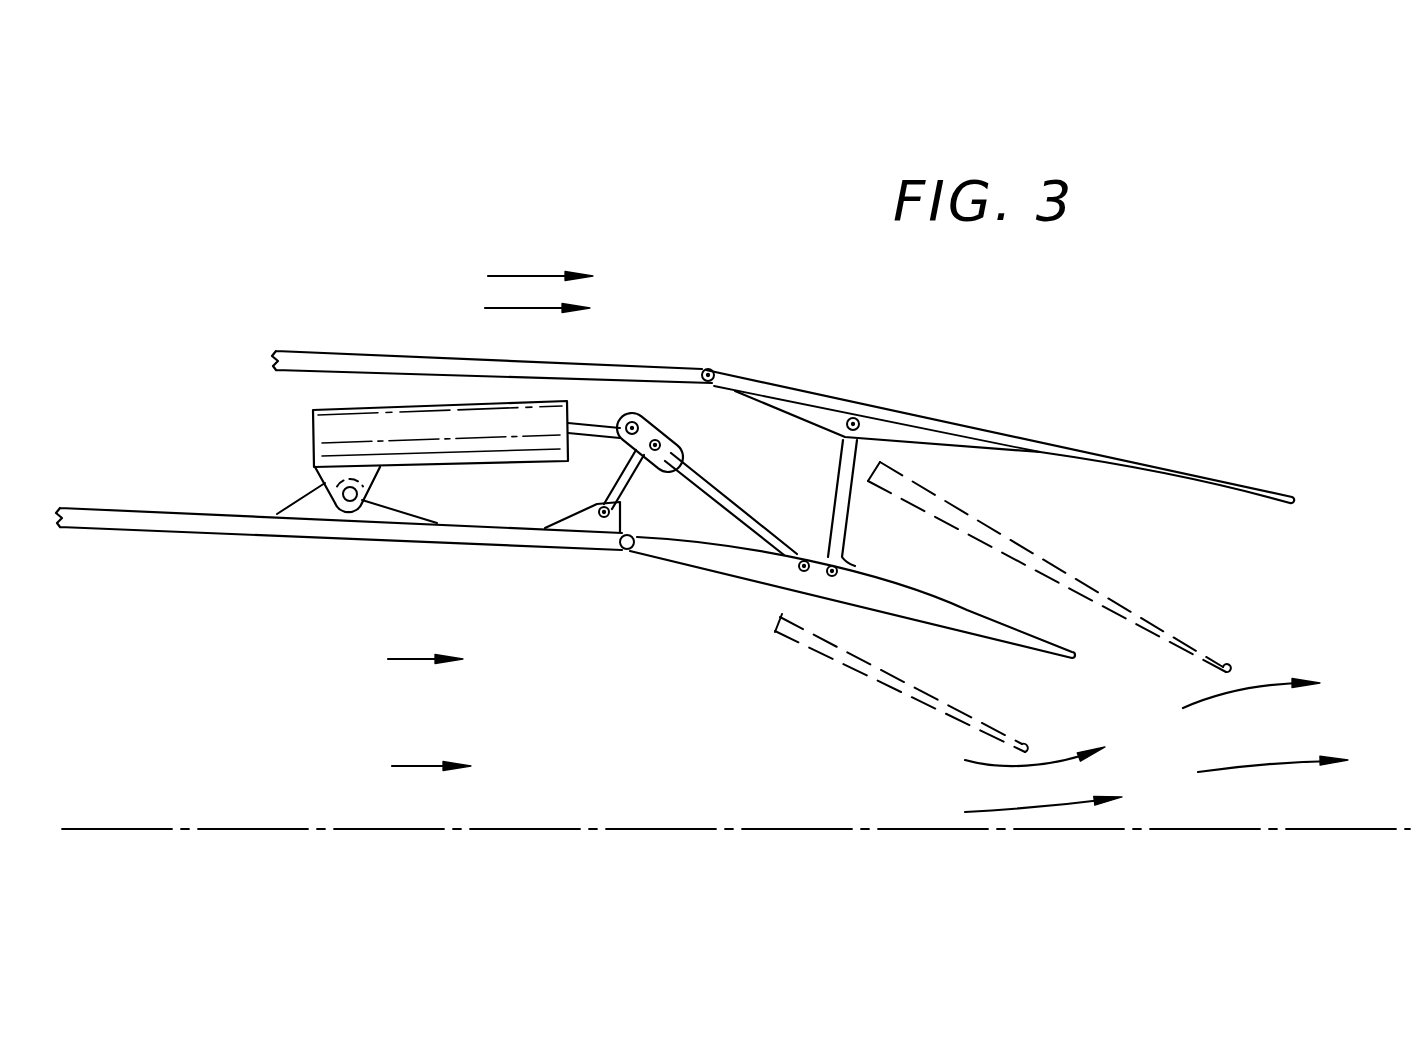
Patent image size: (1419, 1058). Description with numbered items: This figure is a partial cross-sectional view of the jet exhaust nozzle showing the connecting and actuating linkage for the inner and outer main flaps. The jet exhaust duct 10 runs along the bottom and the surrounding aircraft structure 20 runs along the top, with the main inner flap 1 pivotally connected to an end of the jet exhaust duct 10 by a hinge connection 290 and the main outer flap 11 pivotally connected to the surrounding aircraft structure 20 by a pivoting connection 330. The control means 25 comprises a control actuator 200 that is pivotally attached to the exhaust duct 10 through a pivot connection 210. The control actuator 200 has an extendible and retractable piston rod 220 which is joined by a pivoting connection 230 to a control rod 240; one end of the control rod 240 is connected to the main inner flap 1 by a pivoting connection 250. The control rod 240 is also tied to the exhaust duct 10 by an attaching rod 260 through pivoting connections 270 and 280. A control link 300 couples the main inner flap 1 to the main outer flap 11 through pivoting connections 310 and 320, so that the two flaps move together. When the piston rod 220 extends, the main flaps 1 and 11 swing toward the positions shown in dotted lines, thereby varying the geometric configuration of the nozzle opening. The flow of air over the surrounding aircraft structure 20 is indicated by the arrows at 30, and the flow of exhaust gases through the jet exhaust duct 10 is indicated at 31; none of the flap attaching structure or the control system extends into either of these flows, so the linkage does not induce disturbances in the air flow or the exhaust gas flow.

The main inner flap 1 is at (977, 630).
The jet exhaust duct 10 is at (118, 508).
The main outer flap 11 is at (1037, 438).
The surrounding aircraft structure 20 is at (337, 348).
The control means 25 is at (480, 500).
The flow of air 30 is at (522, 275).
The flow of exhaust gases 31 is at (407, 656).
The control actuator 200 is at (305, 445).
The pivot connection 210 is at (364, 505).
The piston rod 220 is at (580, 424).
The pivoting connection 230 is at (648, 402).
The control rod 240 is at (712, 488).
The pivoting connection 250 is at (805, 560).
The attaching rod 260 is at (645, 470).
The pivoting connection 270 is at (600, 510).
The pivoting connection 280 is at (660, 440).
The hinge connection 290 is at (627, 550).
The control link 300 is at (846, 466).
The pivoting connection 310 is at (854, 420).
The pivoting connection 320 is at (838, 569).
The pivoting connection 330 is at (709, 370).